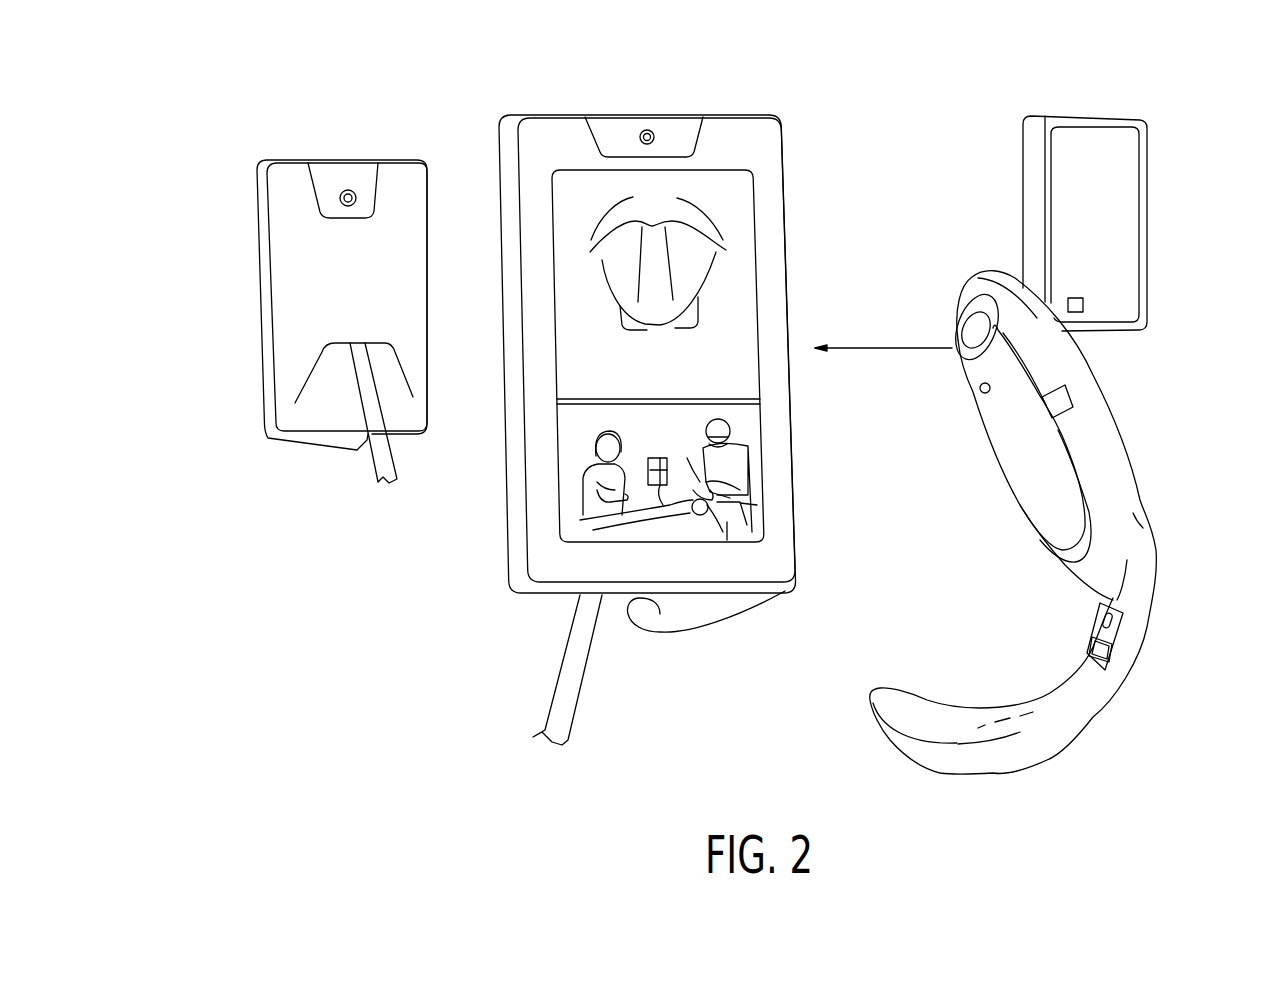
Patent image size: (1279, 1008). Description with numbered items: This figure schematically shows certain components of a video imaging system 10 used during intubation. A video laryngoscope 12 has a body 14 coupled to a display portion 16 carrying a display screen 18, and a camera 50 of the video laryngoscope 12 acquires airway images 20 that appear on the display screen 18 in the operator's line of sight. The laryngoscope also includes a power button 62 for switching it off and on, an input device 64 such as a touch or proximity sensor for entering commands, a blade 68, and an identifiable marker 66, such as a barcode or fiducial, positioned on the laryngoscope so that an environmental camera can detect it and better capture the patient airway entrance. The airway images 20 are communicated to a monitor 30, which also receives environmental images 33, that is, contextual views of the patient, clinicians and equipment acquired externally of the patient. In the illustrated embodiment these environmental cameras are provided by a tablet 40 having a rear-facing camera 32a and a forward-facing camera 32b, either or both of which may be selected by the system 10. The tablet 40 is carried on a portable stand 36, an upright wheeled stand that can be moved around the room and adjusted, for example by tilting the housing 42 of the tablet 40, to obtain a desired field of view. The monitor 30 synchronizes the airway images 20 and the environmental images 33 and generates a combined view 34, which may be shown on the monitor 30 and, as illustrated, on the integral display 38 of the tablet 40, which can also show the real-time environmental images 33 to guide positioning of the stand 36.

The system 10 is at (158, 88).
The video laryngoscope 12 is at (1180, 105).
The body 14 is at (1110, 407).
The display portion 16 is at (1023, 170).
The display screen 18 is at (1122, 210).
The airway images 20 is at (703, 215).
The monitor 30 is at (507, 92).
The rear-facing camera 32a is at (342, 192).
The forward-facing camera 32b is at (645, 130).
The environmental images 33 is at (593, 530).
The combined view 34 is at (748, 398).
The portable stand 36 is at (558, 663).
The display 38 is at (735, 312).
The tablet 40 is at (797, 455).
The housing 42 is at (290, 297).
The camera 50 is at (958, 778).
The power button 62 is at (975, 327).
The input device 64 is at (1085, 308).
The identifiable marker 66 is at (983, 390).
The blade 68 is at (1092, 727).